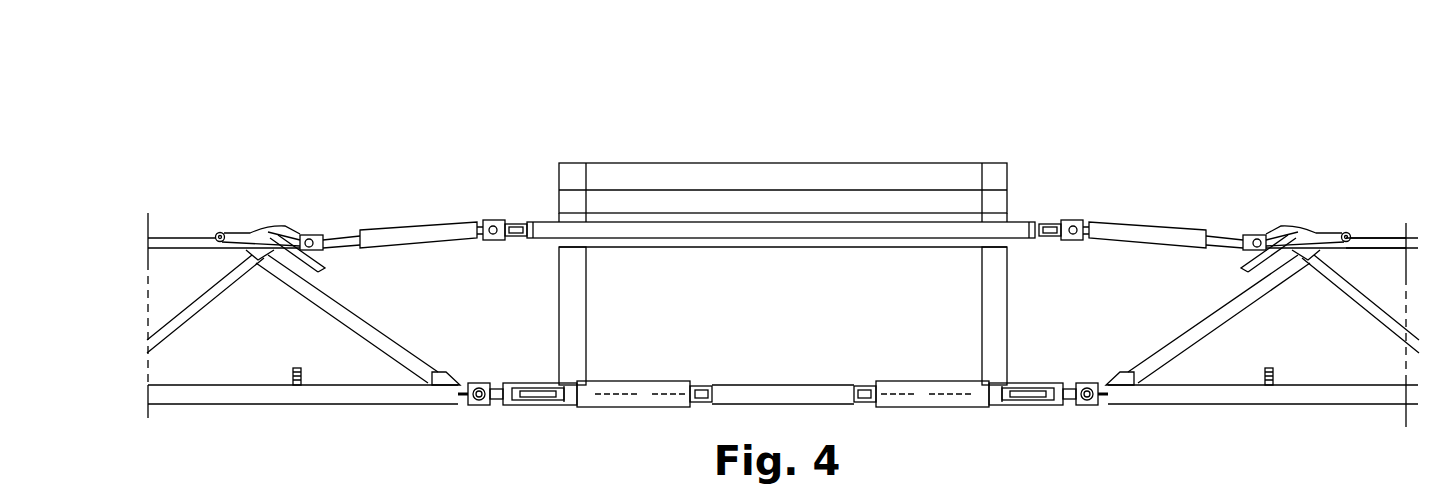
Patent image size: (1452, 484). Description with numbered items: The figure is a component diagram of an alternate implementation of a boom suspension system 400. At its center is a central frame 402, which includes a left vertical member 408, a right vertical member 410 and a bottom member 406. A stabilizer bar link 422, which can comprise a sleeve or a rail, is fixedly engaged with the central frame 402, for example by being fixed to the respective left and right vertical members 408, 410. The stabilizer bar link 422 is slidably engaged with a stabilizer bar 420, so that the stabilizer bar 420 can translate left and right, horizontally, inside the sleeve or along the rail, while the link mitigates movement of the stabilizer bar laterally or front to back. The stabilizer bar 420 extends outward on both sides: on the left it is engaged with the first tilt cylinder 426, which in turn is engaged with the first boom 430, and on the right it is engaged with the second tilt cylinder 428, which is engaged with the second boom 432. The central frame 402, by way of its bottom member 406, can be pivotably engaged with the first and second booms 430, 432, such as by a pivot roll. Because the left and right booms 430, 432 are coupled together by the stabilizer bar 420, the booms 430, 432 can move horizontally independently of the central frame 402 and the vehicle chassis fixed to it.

The boom suspension system 400 is at (1125, 98).
The central frame 402 is at (655, 142).
The bottom member 406 is at (767, 392).
The left vertical member 408 is at (586, 352).
The right vertical member 410 is at (982, 341).
The stabilizer bar 420 is at (548, 224).
The stabilizer bar link 422 is at (797, 213).
The first tilt cylinder 426 is at (418, 233).
The second tilt cylinder 428 is at (1130, 232).
The first boom 430 is at (208, 202).
The second boom 432 is at (1365, 210).